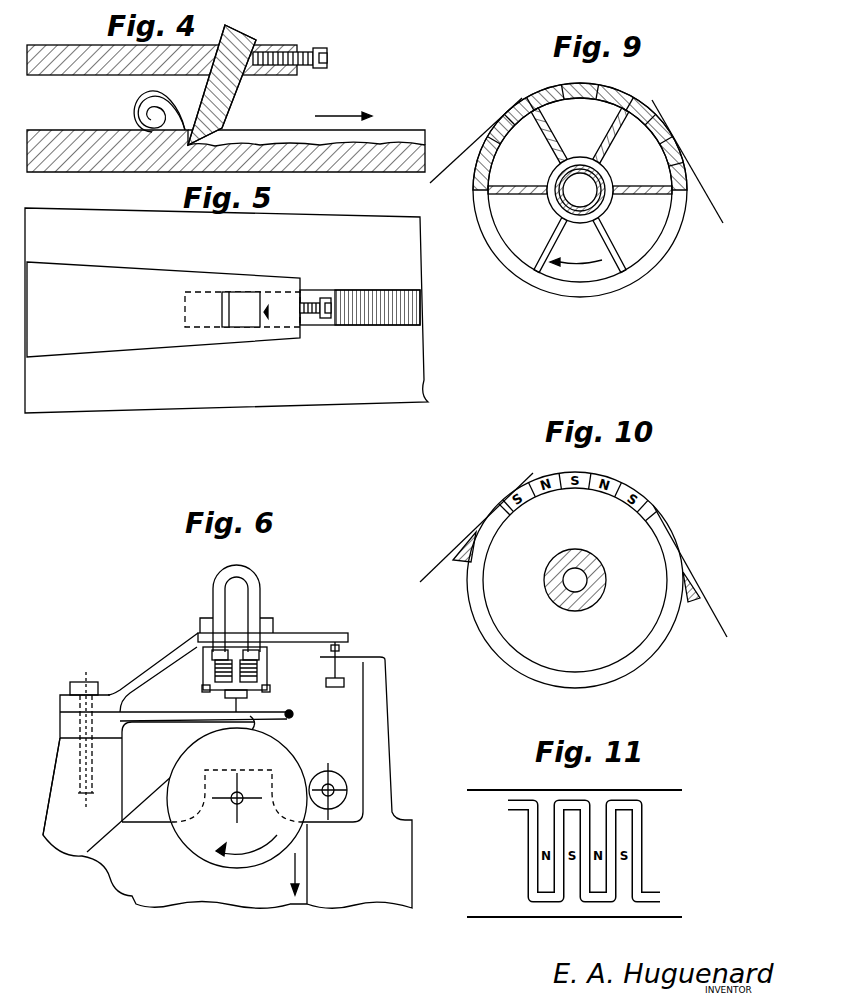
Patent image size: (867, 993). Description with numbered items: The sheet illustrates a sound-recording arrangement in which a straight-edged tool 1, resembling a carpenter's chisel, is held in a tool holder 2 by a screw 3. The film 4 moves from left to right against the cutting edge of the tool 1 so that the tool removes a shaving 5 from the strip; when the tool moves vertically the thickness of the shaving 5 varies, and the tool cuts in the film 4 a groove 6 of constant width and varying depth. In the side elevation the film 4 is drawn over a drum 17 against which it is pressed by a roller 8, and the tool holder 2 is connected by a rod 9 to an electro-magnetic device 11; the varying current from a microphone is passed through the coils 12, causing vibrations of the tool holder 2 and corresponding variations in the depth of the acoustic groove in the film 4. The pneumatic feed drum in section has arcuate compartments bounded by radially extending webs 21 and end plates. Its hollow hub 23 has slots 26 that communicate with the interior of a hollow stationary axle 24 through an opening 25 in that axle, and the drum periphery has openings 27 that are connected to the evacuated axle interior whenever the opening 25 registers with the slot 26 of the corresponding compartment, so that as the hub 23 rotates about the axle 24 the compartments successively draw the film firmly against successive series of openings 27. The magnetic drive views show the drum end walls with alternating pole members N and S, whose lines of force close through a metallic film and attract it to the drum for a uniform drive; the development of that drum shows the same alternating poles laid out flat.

In FIG. 4, the straight-edged tool 1 is at (228, 107).
In FIG. 5, the straight-edged tool 1 is at (240, 300).
In FIG. 6, the straight-edged tool 1 is at (296, 550).
In FIG. 4, the tool holder 2 is at (80, 58).
In FIG. 5, the tool holder 2 is at (101, 287).
In FIG. 4, the screw 3 is at (328, 58).
In FIG. 5, the screw 3 is at (322, 300).
In FIG. 4, the film 4 is at (75, 152).
In FIG. 5, the film 4 is at (155, 387).
In FIG. 9, the film 4 is at (463, 155).
In FIG. 6, the film 4 is at (110, 824).
In FIG. 4, the shaving 5 is at (150, 104).
In FIG. 4, the groove 6 is at (390, 136).
In FIG. 5, the groove 6 is at (407, 318).
In FIG. 9, the groove 6 is at (430, 305).
In FIG. 6, the roller 8 is at (345, 797).
In FIG. 6, the rod 9 is at (242, 712).
In FIG. 6, the electro-magnetic device 11 is at (235, 628).
In FIG. 6, the coils 12 is at (248, 682).
In FIG. 6, the wheel 17 is at (243, 853).
In FIG. 9, the radially extending webs 21 is at (545, 127).
In FIG. 9, the hub 23 is at (555, 207).
In FIG. 9, the hollow stationary axle 24 is at (582, 212).
In FIG. 9, the opening 25 is at (582, 172).
In FIG. 9, the slots 26 is at (575, 165).
In FIG. 9, the openings 27 is at (660, 120).